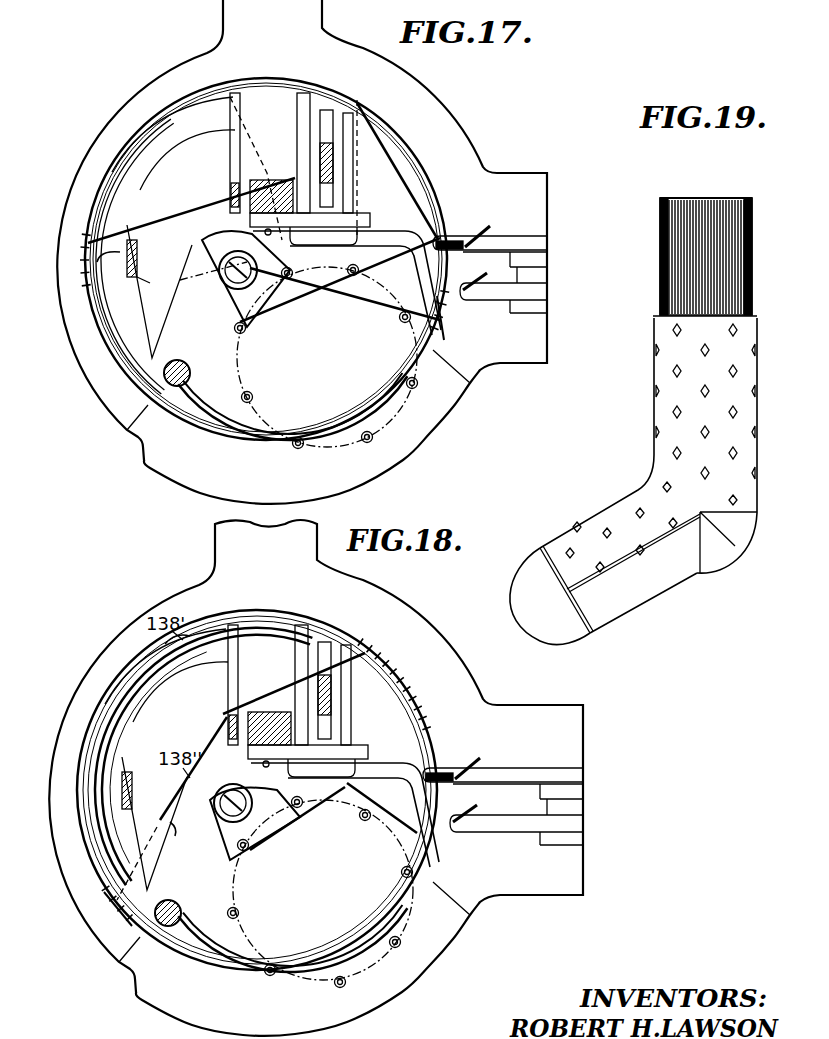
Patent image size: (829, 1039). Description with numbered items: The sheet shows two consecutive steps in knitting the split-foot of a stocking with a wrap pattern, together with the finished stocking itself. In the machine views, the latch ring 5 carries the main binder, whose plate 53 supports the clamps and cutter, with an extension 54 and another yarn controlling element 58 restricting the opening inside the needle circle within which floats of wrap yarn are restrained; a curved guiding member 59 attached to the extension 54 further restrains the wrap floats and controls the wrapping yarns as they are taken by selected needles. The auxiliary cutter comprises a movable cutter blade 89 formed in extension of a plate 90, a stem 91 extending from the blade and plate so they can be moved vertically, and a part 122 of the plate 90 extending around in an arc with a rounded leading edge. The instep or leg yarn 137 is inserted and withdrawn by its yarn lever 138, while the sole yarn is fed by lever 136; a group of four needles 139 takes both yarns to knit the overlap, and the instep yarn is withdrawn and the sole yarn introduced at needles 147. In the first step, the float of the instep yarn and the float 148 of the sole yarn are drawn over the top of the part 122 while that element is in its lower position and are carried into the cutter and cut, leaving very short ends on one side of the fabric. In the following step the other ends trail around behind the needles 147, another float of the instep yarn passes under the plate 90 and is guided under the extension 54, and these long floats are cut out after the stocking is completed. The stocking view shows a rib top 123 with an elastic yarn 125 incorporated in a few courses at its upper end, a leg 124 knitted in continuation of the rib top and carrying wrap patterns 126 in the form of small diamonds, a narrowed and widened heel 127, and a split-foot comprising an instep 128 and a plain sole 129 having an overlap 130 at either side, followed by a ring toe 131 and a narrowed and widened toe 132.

In FIG. 17, the latch ring 5 is at (302, 252).
In FIG. 18, the latch ring 5 is at (316, 778).
In FIG. 17, the plate 53 is at (397, 170).
In FIG. 18, the plate 53 is at (293, 821).
In FIG. 17, the extension 54 is at (285, 392).
In FIG. 18, the extension 54 is at (251, 800).
In FIG. 17, the yarn controlling element 58 is at (262, 293).
In FIG. 18, the yarn controlling element 58 is at (277, 822).
In FIG. 17, the curved guiding member 59 is at (372, 392).
In FIG. 18, the curved guiding member 59 is at (321, 892).
In FIG. 17, the movable cutter blade 89 is at (130, 274).
In FIG. 17, the plate 90 is at (144, 256).
In FIG. 18, the plate 90 is at (154, 823).
In FIG. 17, the stem 91 is at (153, 285).
In FIG. 17, the part 122 is at (190, 162).
In FIG. 18, the part 122 is at (180, 698).
In FIG. 17, the leg yarn 137 is at (290, 88).
In FIG. 18, the leg yarn 137 is at (257, 790).
In FIG. 17, the needles 139 is at (86, 258).
In FIG. 18, the needles 139 is at (329, 684).
In FIG. 17, the float 148 is at (205, 190).
In FIG. 18, the float 148 is at (281, 666).
In FIG. 17, the yarn lever 138 is at (545, 291).
In FIG. 18, the yarn lever 138 is at (536, 822).
In FIG. 17, the lever 136 is at (531, 232).
In FIG. 18, the lever 136 is at (503, 771).
In FIG. 17, the needles 147 is at (445, 315).
In FIG. 18, the needles 147 is at (112, 916).
In FIG. 19, the rib top 123 is at (660, 266).
In FIG. 19, the elastic yarn 125 is at (709, 204).
In FIG. 19, the leg 124 is at (655, 417).
In FIG. 19, the wrap patterns 126 is at (672, 370).
In FIG. 19, the instep 128 is at (607, 518).
In FIG. 19, the ring toe 131 is at (545, 548).
In FIG. 19, the narrowed and widened toe 132 is at (567, 590).
In FIG. 19, the overlap 130 is at (623, 562).
In FIG. 19, the plain sole 129 is at (670, 585).
In FIG. 19, the heel 127 is at (747, 538).